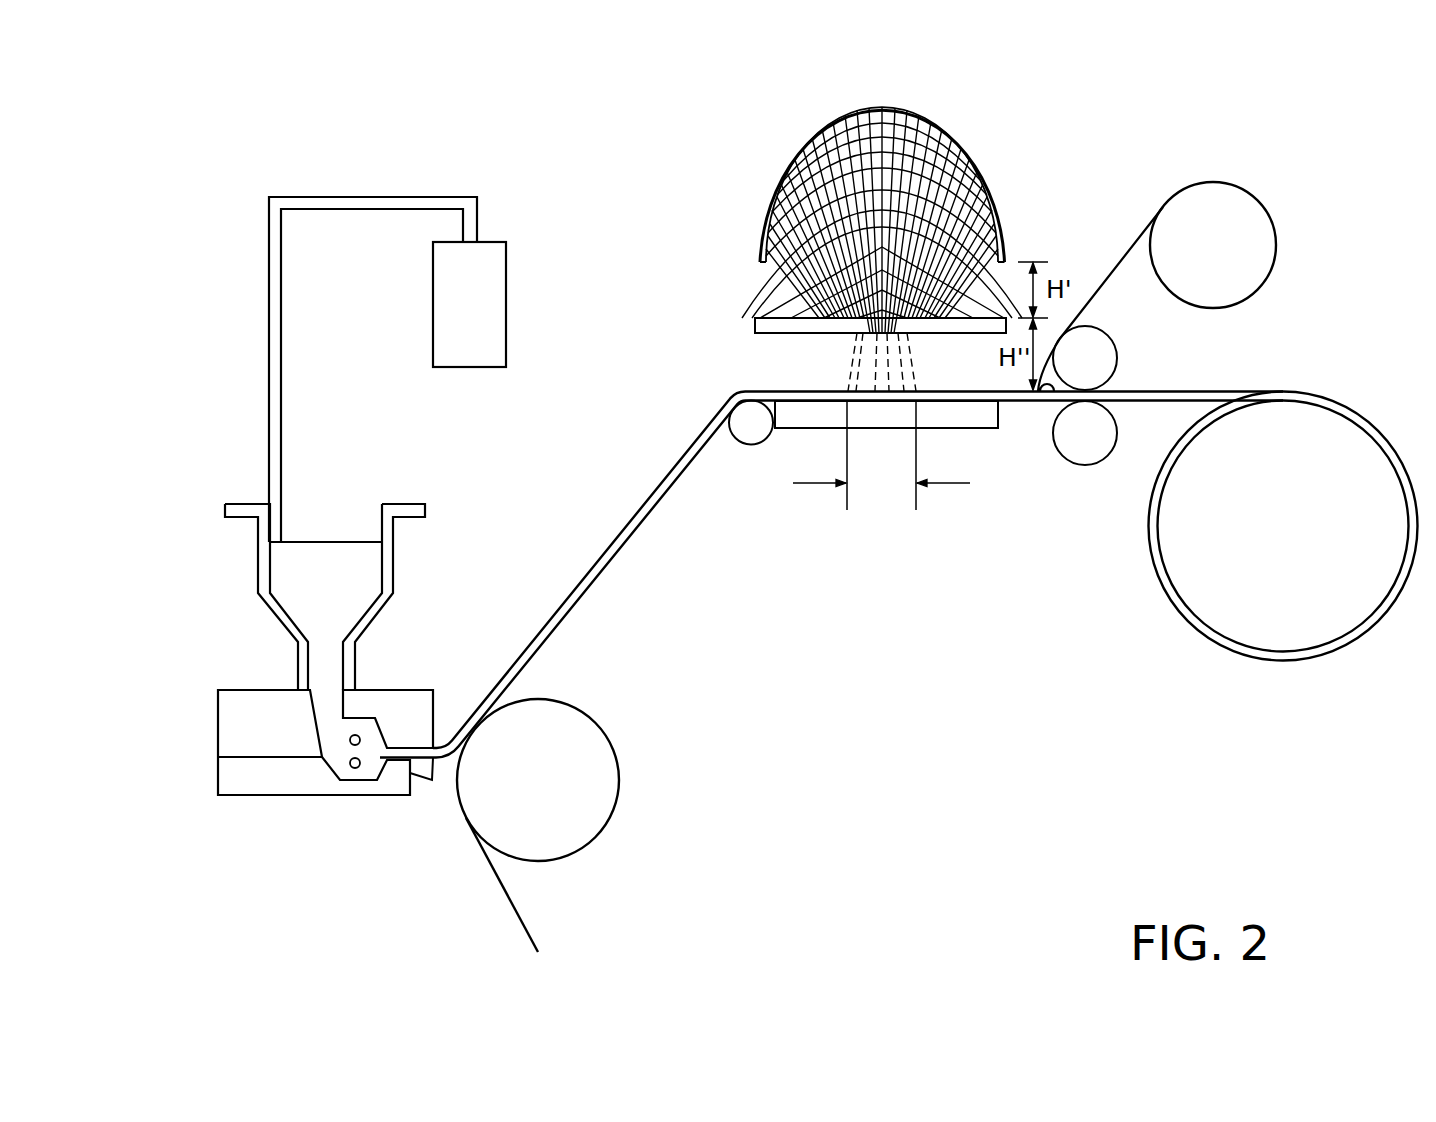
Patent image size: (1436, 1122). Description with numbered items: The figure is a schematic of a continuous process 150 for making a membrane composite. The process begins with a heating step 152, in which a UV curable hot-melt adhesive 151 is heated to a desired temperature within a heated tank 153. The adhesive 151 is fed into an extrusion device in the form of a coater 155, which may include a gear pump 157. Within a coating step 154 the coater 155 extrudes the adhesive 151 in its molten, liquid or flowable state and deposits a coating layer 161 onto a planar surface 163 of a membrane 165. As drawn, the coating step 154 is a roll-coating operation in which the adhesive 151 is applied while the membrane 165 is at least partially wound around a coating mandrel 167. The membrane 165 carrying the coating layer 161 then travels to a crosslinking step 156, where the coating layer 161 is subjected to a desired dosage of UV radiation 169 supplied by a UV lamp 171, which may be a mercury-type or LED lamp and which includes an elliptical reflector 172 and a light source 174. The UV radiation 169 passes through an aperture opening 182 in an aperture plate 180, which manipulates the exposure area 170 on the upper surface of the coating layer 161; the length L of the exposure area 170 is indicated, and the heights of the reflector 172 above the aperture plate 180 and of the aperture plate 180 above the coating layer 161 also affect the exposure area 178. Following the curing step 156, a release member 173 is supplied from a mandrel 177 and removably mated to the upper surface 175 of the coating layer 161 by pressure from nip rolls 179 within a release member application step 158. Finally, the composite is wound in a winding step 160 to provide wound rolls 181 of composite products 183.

The continuous process 150 is at (683, 213).
The UV curable hot-melt adhesive 151 is at (352, 575).
The heating step 152 is at (553, 523).
The heated tank 153 is at (385, 613).
The coating step 154 is at (394, 848).
The coater 155 is at (270, 797).
The crosslinking step 156 is at (735, 255).
The gear pump 157 is at (349, 768).
The release member application step 158 is at (1108, 245).
The winding step 160 is at (1138, 600).
The coating layer 161 is at (913, 360).
The planar surface 163 is at (613, 567).
The membrane 165 is at (523, 923).
The coating mandrel 167 is at (613, 745).
The UV radiation 169 is at (772, 308).
The exposure area 170 is at (928, 388).
The UV lamp 171 is at (945, 117).
The elliptical reflector 172 is at (967, 157).
The release member 173 is at (1092, 303).
The light source 174 is at (840, 172).
The upper surface 175 is at (1043, 393).
The mandrel 177 is at (1262, 205).
The exposure area 178 is at (848, 381).
The nip rolls 179 is at (1057, 485).
The aperture plate 180 is at (752, 334).
The wound rolls 181 is at (1245, 657).
The aperture opening 182 is at (855, 343).
The composite products 183 is at (1185, 391).